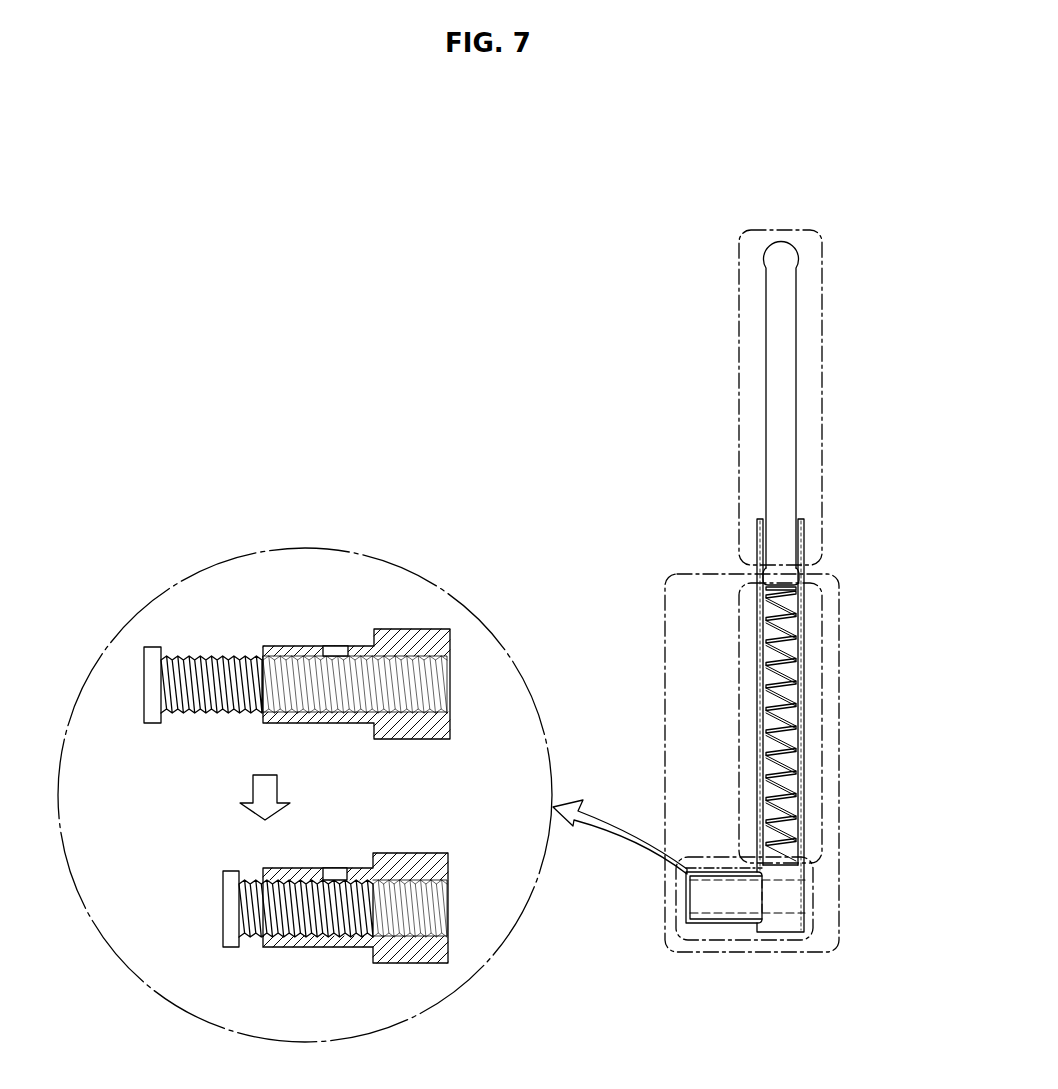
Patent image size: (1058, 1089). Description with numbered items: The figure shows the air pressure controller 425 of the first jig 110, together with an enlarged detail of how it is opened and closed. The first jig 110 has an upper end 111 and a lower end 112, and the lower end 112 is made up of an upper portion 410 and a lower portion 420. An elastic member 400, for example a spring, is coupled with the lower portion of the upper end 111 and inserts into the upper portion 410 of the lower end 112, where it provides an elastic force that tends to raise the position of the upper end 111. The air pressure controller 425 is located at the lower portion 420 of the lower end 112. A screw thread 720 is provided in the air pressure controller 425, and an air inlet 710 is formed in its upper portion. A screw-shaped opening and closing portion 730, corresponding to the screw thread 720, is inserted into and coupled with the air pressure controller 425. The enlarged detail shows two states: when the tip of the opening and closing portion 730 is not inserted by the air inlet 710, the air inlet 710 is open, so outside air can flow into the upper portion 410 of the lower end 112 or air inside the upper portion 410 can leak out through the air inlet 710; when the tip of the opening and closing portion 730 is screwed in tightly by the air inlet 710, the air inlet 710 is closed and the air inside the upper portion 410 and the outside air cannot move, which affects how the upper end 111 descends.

The first jig 110 is at (755, 141).
The upper end 111 is at (822, 399).
The lower end 112 is at (839, 618).
The elastic member 400 is at (792, 772).
The upper portion 410 is at (822, 678).
The lower portion 420 is at (815, 897).
The air pressure controller 425 is at (722, 925).
The air inlet 710 is at (336, 647).
The screw thread 720 is at (345, 698).
The opening and closing portion 730 is at (153, 715).